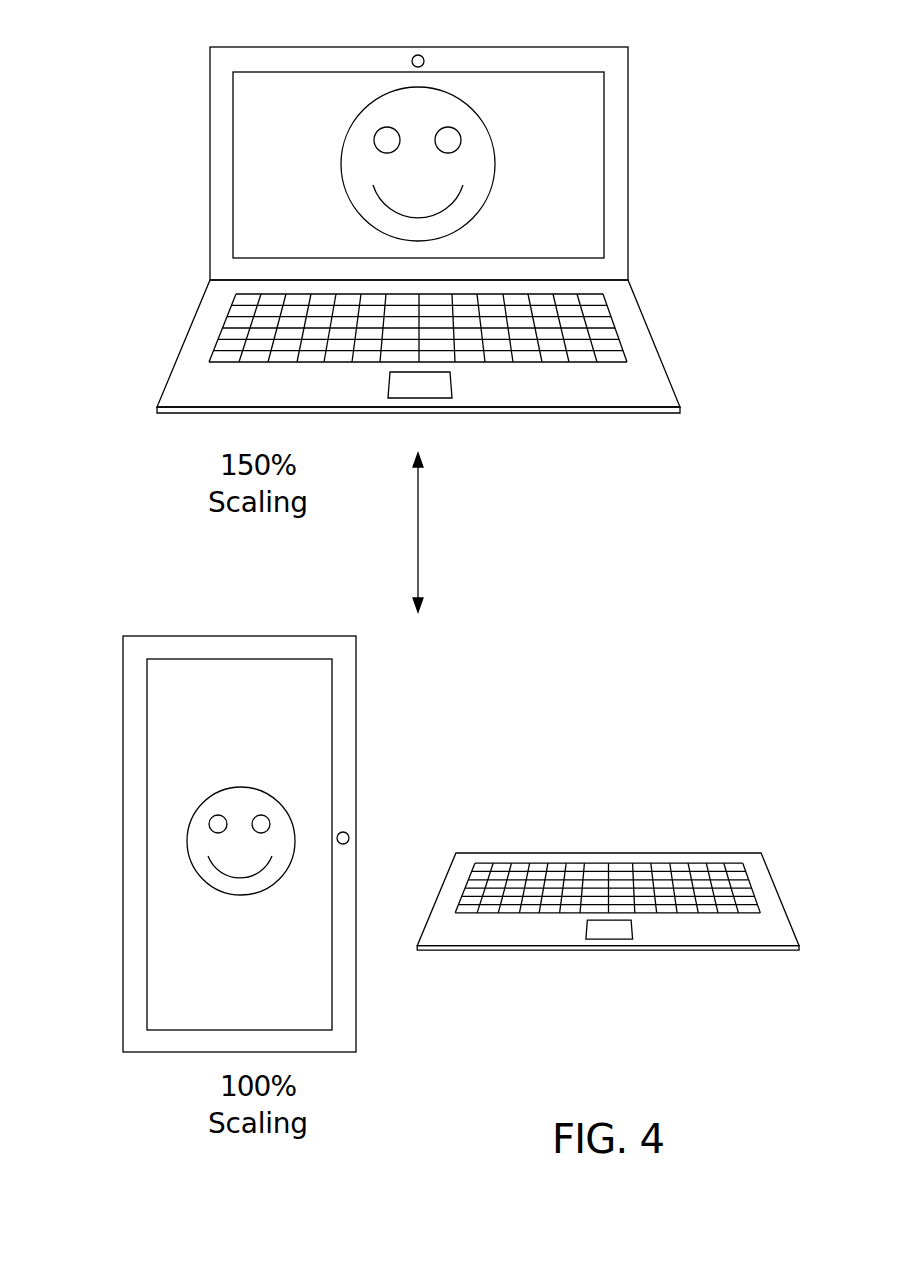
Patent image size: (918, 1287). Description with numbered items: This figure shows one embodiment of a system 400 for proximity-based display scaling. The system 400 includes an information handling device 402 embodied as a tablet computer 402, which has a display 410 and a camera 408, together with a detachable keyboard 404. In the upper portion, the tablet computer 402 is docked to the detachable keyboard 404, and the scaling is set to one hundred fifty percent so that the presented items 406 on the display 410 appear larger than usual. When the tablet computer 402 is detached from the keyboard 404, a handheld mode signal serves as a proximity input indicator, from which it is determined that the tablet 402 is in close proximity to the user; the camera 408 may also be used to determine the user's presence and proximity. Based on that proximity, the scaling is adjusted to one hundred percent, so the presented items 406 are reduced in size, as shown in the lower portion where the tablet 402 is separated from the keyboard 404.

The system for proximity-based display scaling 400 is at (134, 50).
The information handling device 402 is at (210, 229).
The detachable keyboard 404 is at (187, 335).
The presented items 406 is at (364, 110).
The camera 408 is at (414, 56).
The display 410 is at (233, 141).